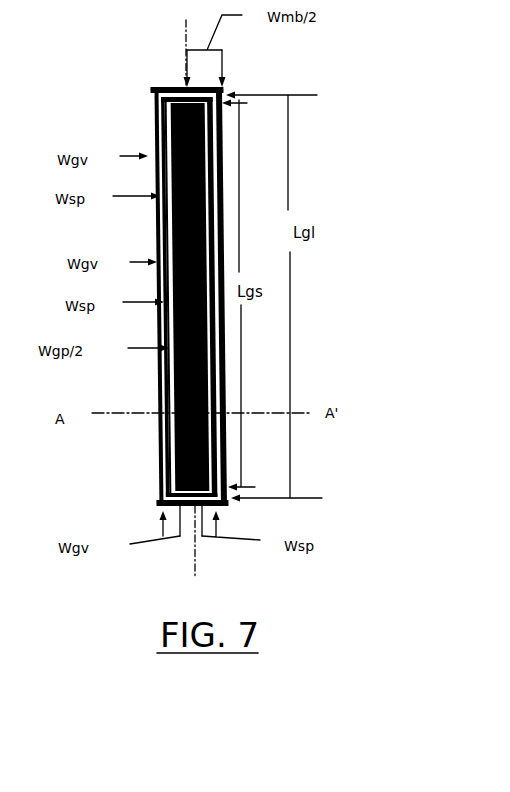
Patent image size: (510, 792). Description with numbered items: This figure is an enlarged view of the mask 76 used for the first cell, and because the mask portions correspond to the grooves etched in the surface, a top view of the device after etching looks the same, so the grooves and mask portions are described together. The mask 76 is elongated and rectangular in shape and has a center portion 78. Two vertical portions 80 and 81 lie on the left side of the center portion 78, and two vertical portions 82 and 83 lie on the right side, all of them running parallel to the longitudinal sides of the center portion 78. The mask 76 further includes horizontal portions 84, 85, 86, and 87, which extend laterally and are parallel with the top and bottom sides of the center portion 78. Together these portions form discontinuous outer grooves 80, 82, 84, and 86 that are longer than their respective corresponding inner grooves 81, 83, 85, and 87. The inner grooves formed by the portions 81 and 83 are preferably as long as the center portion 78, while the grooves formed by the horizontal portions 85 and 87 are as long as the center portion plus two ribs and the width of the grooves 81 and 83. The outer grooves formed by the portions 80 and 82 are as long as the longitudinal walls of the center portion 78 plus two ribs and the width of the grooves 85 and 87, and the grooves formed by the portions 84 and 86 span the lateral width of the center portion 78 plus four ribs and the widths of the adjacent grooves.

The mask 76 is at (116, 381).
The center portion 78 is at (163, 101).
The vertical portion 80 is at (167, 123).
The vertical portion 81 is at (169, 135).
The vertical portion 82 is at (219, 123).
The vertical portion 83 is at (211, 148).
The horizontal portion 84 is at (181, 108).
The horizontal portion 85 is at (178, 100).
The horizontal portion 86 is at (226, 508).
The horizontal portion 87 is at (188, 510).